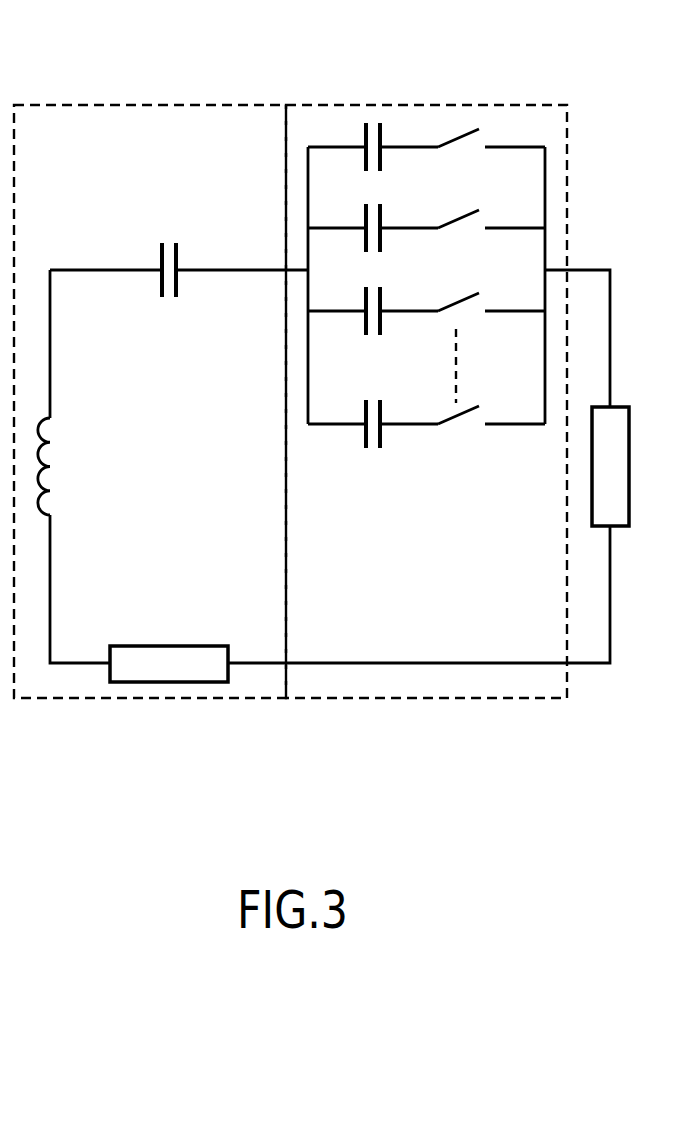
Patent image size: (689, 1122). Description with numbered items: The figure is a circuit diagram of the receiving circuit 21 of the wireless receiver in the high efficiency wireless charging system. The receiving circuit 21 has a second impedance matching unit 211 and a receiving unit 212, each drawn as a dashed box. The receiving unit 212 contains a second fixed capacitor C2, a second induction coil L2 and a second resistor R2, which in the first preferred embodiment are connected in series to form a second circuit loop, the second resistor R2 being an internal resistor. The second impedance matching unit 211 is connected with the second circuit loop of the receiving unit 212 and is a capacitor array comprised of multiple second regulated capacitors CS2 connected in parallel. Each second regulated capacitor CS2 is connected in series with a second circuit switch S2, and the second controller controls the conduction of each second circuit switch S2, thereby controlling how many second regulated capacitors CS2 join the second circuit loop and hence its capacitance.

The receiving circuit 21 is at (321, 418).
The second impedance matching unit 211 is at (432, 103).
The receiving unit 212 is at (140, 103).
The second fixed capacitor C2 is at (173, 222).
The second induction coil L2 is at (75, 470).
The second resistor R2 is at (167, 628).
The second regulated capacitor CS2 is at (335, 447).
The second circuit switch S2 is at (463, 447).